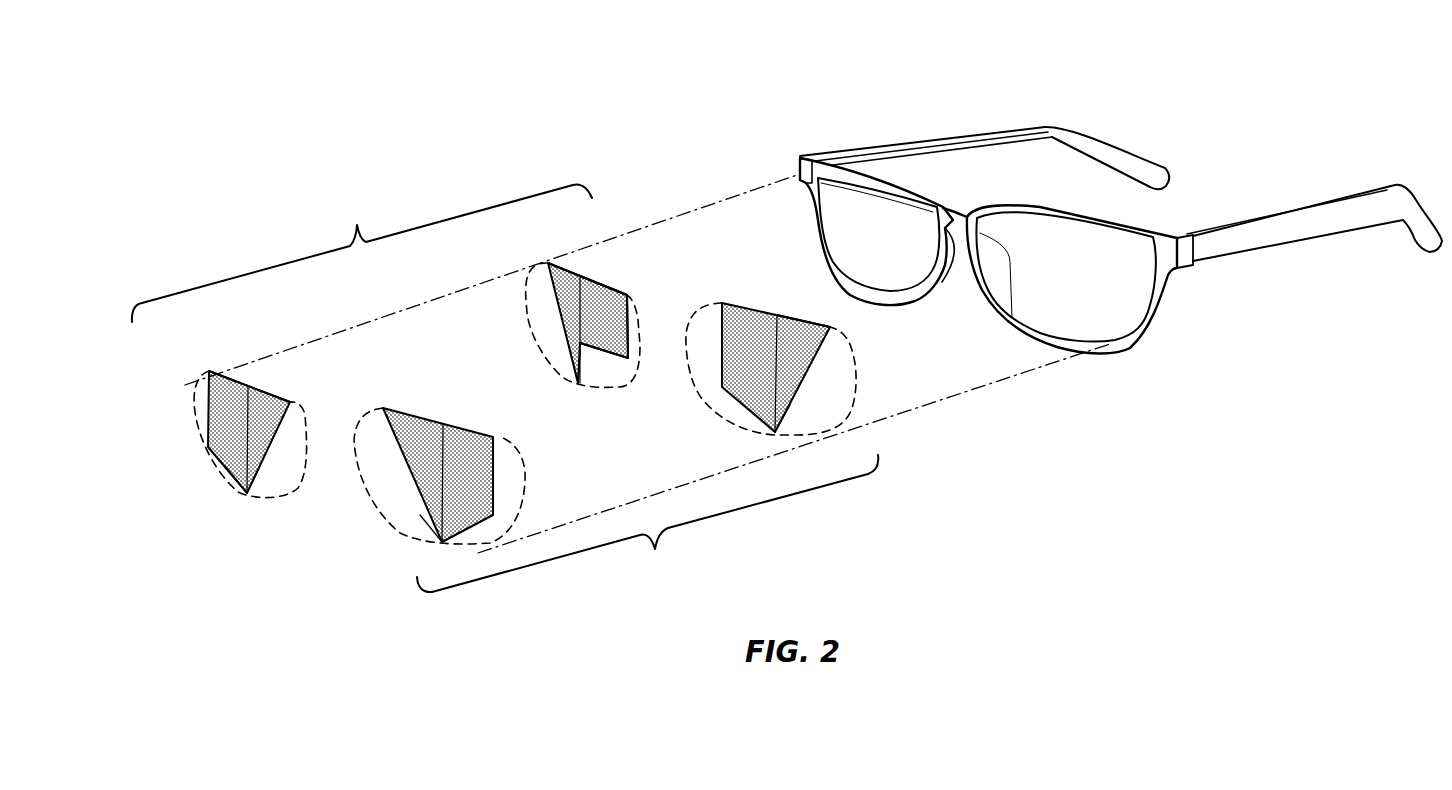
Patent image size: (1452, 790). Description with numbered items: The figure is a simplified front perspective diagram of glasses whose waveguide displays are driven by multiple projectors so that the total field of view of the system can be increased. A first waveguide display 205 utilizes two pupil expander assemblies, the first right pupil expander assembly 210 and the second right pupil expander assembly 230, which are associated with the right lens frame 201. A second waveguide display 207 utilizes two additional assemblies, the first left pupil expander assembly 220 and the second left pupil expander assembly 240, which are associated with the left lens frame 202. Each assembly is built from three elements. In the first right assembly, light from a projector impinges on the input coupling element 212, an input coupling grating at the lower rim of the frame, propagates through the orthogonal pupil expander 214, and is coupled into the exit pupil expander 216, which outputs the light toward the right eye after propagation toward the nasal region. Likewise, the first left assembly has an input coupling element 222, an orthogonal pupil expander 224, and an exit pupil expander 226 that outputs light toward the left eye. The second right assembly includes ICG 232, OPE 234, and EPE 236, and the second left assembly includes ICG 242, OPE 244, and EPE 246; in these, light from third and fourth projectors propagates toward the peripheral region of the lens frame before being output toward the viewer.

The right lens frame 201 is at (893, 172).
The left lens frame 202 is at (1110, 220).
The first waveguide display 205 is at (362, 253).
The second waveguide display 207 is at (647, 523).
The first right pupil expander assembly 210 is at (555, 327).
The input coupling element 212 is at (578, 383).
The orthogonal pupil expander 214 is at (572, 307).
The exit pupil expander 216 is at (604, 329).
The first left pupil expander assembly 220 is at (798, 383).
The input coupling element 222 is at (775, 432).
The orthogonal pupil expander 224 is at (803, 336).
The exit pupil expander 226 is at (753, 373).
The second right pupil expander assembly 230 is at (224, 445).
The input coupling grating 232 is at (247, 493).
The orthogonal pupil expander 234 is at (268, 395).
The exit pupil expander 236 is at (229, 439).
The second left pupil expander assembly 240 is at (476, 490).
The input coupling grating 242 is at (442, 542).
The orthogonal pupil expander 244 is at (423, 483).
The exit pupil expander 246 is at (471, 476).